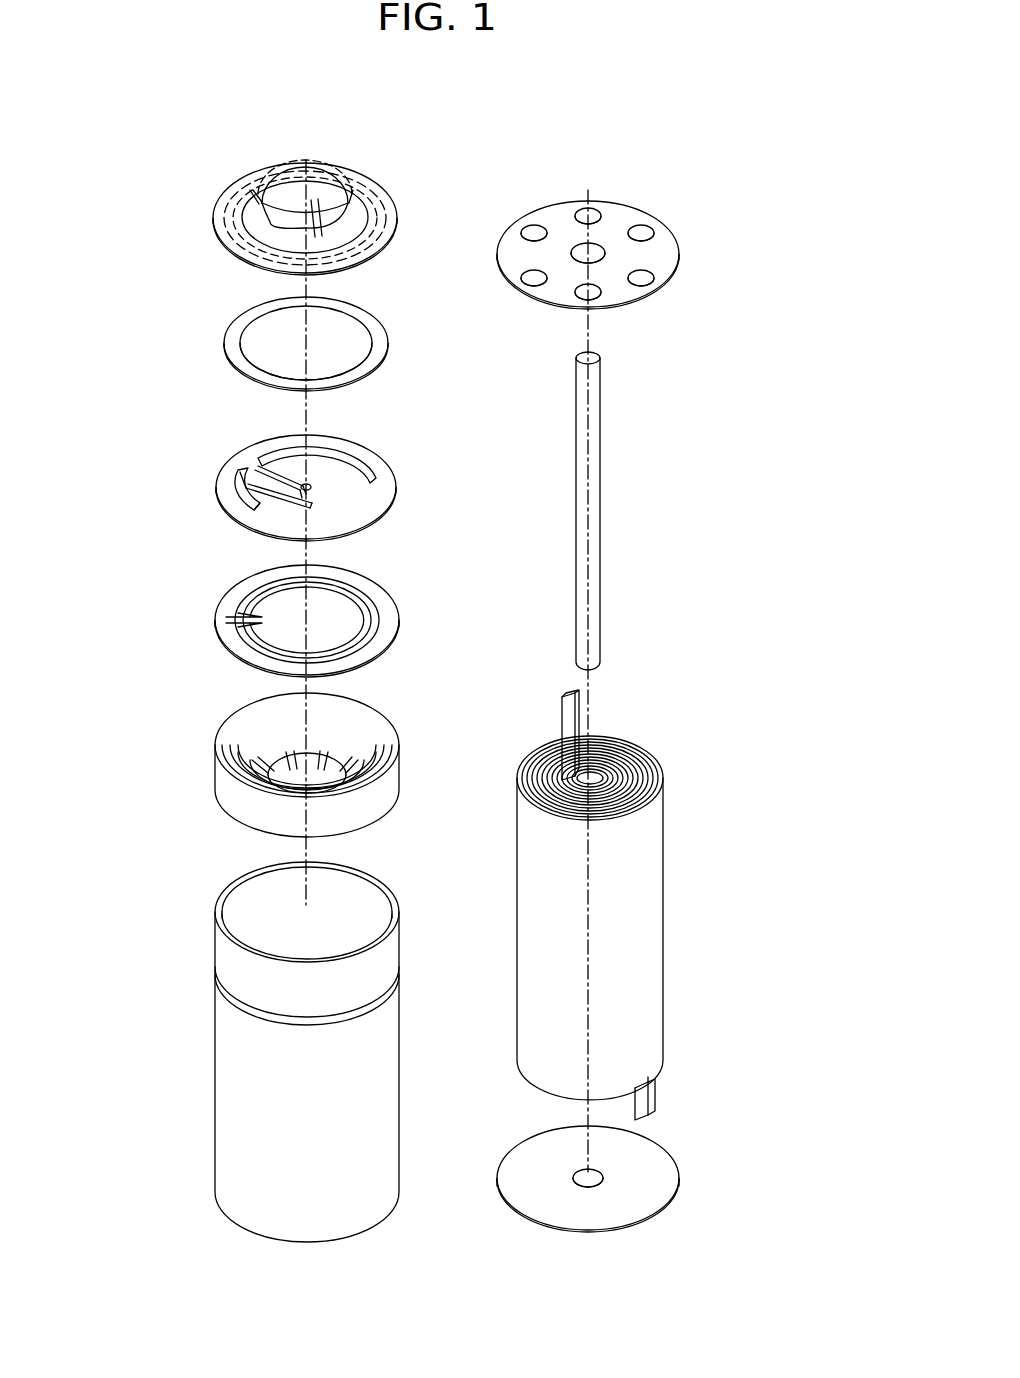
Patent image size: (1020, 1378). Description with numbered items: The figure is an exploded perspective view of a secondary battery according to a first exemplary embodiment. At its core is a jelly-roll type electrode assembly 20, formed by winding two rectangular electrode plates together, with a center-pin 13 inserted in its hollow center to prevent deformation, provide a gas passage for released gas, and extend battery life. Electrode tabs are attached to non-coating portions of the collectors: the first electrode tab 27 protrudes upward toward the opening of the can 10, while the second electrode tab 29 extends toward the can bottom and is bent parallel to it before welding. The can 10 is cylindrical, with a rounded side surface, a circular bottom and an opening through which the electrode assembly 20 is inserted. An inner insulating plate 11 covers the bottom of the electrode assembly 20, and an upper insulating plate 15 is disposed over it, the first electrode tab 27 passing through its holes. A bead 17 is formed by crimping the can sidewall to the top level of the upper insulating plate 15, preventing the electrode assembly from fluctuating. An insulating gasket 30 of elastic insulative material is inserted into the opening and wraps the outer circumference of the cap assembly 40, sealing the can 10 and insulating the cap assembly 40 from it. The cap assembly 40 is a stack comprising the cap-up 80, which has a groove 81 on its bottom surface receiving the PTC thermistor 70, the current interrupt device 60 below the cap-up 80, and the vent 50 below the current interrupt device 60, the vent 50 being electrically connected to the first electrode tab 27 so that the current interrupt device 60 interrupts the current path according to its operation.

The can 10 is at (226, 1090).
The inner insulating plate 11 is at (645, 1170).
The center-pin 13 is at (596, 512).
The upper insulating plate 15 is at (664, 245).
The bead 17 is at (226, 988).
The electrode assembly 20 is at (636, 930).
The first electrode tab 27 is at (562, 708).
The second electrode tab 29 is at (648, 1098).
The insulating gasket 30 is at (224, 782).
The cap assembly 40 is at (103, 212).
The vent 50 is at (224, 600).
The current interrupt device 60 is at (224, 472).
The PTC thermistor 70 is at (224, 344).
The cap-up 80 is at (206, 211).
The groove 81 is at (228, 188).